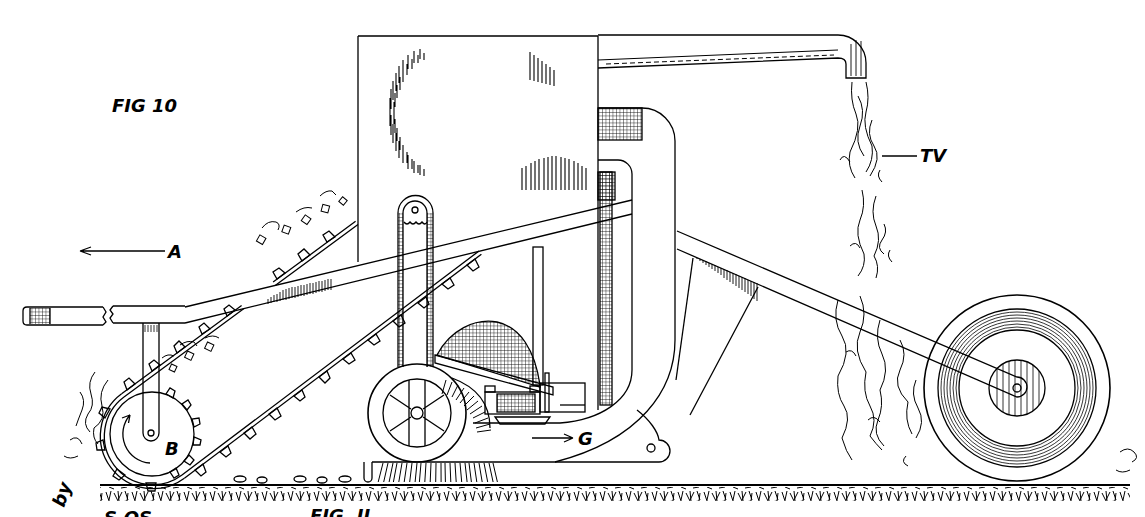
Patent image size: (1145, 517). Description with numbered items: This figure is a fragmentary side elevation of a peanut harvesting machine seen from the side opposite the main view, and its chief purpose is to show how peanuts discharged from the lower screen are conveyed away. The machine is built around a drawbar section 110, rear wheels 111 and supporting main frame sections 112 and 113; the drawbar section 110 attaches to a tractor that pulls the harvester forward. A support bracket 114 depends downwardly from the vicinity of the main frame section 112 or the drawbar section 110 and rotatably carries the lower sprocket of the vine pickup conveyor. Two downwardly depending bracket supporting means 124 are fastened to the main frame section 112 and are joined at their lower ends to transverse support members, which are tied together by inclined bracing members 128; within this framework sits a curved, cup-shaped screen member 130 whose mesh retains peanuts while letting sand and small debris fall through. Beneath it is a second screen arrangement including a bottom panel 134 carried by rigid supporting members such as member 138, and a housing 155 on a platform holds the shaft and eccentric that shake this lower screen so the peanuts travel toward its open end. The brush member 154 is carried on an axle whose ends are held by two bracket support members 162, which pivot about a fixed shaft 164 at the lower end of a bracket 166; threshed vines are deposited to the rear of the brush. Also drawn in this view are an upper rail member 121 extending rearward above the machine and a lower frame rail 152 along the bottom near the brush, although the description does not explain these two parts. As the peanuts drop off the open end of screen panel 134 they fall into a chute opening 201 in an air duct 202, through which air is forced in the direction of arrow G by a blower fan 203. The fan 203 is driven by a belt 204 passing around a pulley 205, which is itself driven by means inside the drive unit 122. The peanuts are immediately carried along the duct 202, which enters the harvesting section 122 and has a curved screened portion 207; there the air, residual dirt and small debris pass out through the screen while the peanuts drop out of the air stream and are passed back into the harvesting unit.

The drawbar section 110 is at (157, 311).
The rear wheels 111 is at (1027, 297).
The supporting main frame section 112 is at (257, 293).
The main frame section 113 is at (808, 290).
The support bracket 114 is at (143, 360).
The discharge rail 121 is at (732, 48).
The drive unit 122 is at (486, 128).
The bracket supporting means 124 is at (543, 275).
The inclined bracing members 128 is at (465, 365).
The screen member 130 is at (495, 327).
The bottom panel 134 is at (530, 407).
The rigid supporting member 138 is at (493, 400).
The frame rail 152 is at (365, 470).
The brush member 154 is at (472, 480).
The housing 155 is at (580, 388).
The bracket support members 162 is at (624, 458).
The fixed shaft 164 is at (659, 447).
The bracket 166 is at (726, 347).
The chute opening 201 is at (518, 427).
The air duct 202 is at (668, 386).
The blower fan 203 is at (376, 435).
The belt 204 is at (402, 348).
The pulley 205 is at (422, 208).
The curved screened portion 207 is at (643, 120).